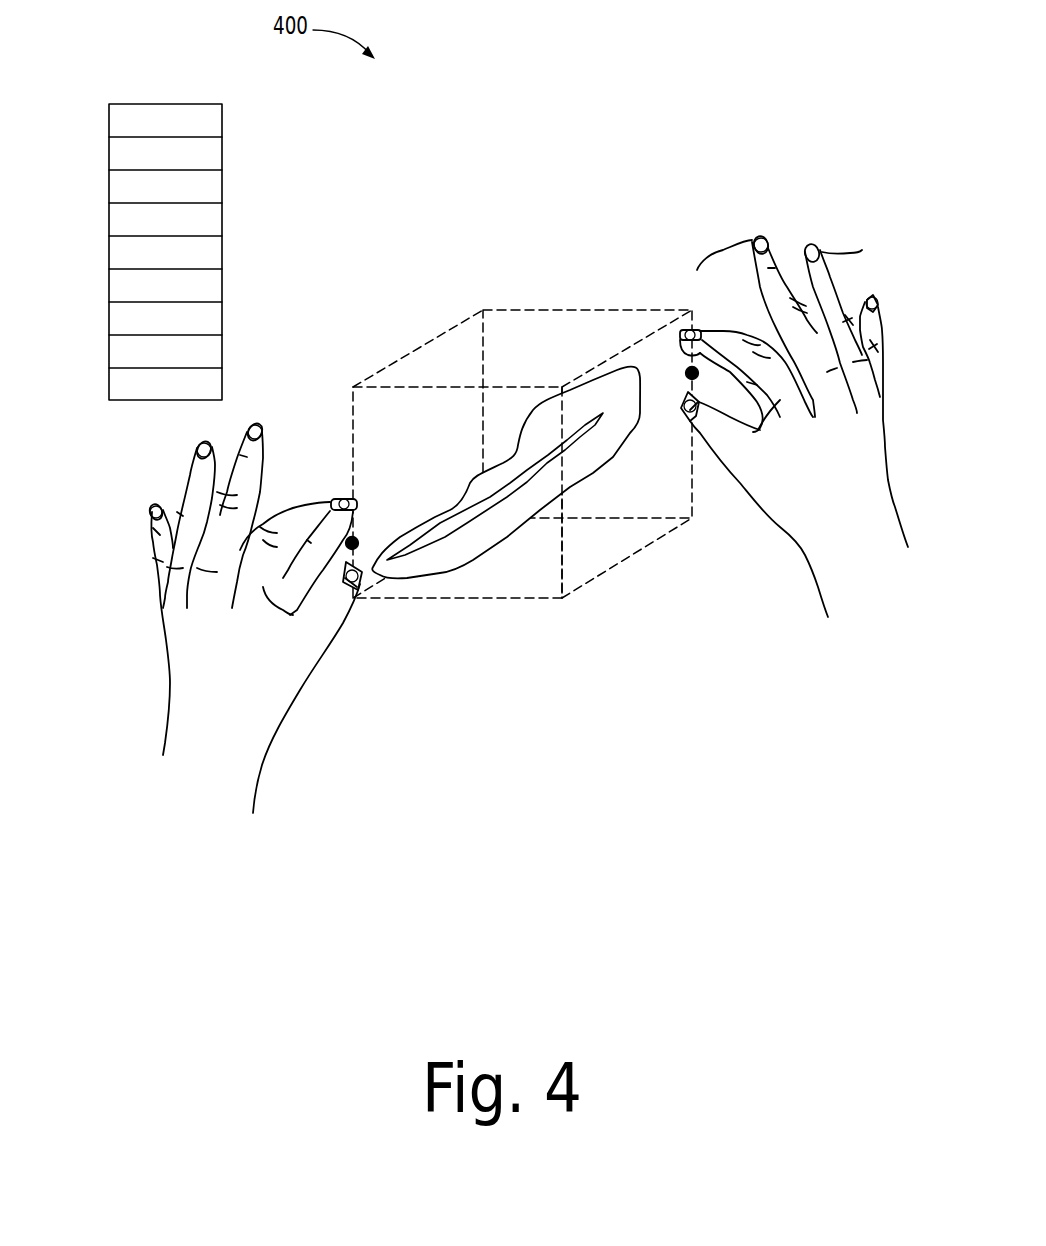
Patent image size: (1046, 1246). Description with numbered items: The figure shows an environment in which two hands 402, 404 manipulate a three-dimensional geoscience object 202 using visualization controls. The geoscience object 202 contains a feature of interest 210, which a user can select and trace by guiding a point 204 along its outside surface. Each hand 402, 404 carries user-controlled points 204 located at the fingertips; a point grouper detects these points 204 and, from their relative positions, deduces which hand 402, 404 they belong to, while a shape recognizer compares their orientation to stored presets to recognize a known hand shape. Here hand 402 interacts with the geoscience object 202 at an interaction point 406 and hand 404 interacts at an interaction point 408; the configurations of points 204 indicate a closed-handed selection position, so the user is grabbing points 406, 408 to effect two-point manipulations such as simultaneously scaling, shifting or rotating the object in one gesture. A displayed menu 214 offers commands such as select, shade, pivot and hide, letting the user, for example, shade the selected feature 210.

The menu 214 is at (167, 104).
The 3D geoscience object 202 is at (430, 341).
The feature of interest 210 is at (503, 518).
The user-controlled points 204 is at (200, 442).
The hand 402 is at (294, 688).
The hand 404 is at (808, 562).
The interaction point 406 is at (357, 543).
The interaction point 408 is at (686, 371).